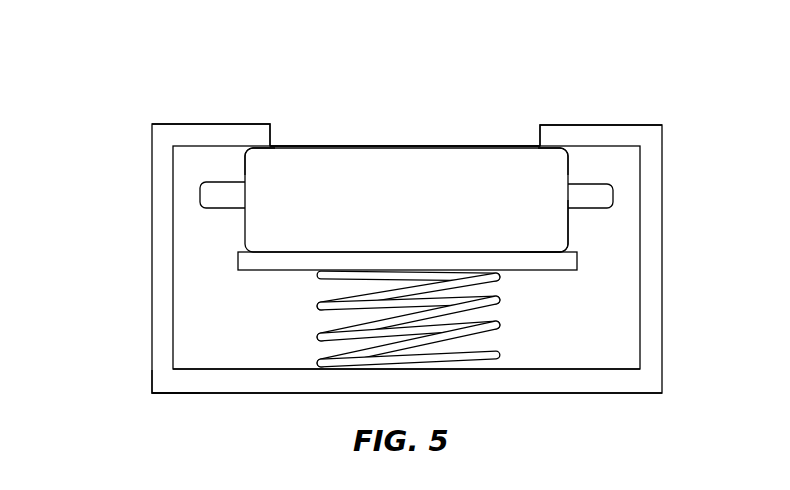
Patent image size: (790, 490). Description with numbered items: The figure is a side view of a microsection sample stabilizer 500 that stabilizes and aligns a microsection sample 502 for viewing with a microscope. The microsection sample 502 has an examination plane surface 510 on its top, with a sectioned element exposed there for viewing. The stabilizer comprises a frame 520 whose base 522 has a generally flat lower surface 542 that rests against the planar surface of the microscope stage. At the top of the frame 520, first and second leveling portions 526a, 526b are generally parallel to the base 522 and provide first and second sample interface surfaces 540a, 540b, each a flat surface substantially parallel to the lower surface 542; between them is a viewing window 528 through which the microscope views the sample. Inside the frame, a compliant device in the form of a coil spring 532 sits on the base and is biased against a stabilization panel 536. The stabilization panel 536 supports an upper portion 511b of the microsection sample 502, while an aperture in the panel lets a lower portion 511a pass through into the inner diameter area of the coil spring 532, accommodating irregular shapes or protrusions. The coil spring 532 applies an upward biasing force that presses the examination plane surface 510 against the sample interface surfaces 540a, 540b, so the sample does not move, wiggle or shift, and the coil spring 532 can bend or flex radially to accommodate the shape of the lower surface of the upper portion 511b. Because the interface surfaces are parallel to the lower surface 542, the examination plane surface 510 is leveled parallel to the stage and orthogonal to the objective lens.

The microsection sample stabilizer 500 is at (111, 55).
The microsection sample 502 is at (216, 229).
The examination plane surface 510 is at (384, 138).
The lower portion of the microsection sample 511a is at (392, 325).
The upper portion of the microsection sample 511b is at (556, 224).
The frame 520 is at (131, 271).
The base 522 is at (620, 381).
The first leveling portion 526a is at (231, 124).
The second leveling portion 526b is at (606, 138).
The viewing window 528 is at (452, 124).
The coil spring 532 is at (506, 357).
The stabilization panel 536 is at (563, 259).
The first sample interface surface 540a is at (264, 158).
The second sample interface surface 540b is at (546, 158).
The lower surface of the base 542 is at (166, 400).